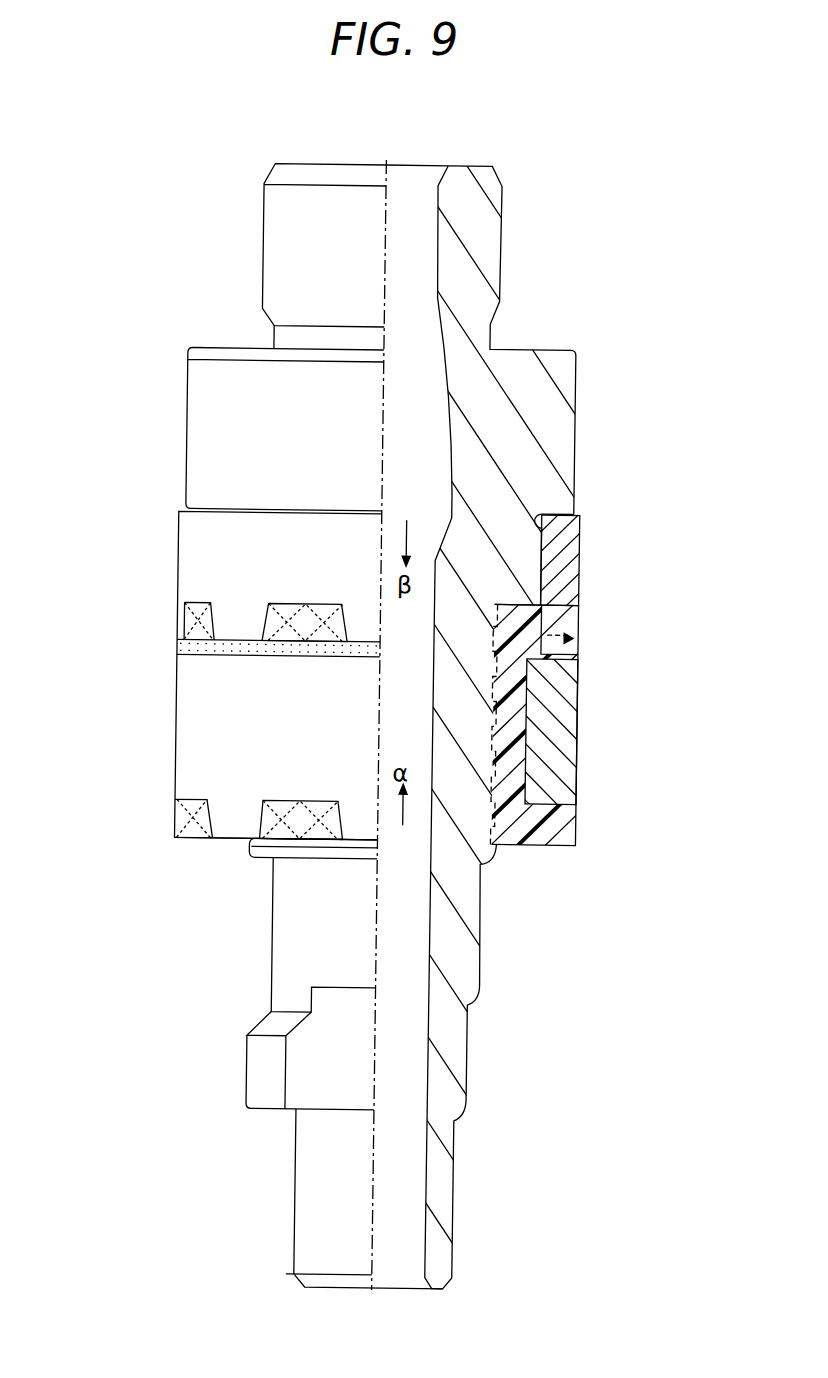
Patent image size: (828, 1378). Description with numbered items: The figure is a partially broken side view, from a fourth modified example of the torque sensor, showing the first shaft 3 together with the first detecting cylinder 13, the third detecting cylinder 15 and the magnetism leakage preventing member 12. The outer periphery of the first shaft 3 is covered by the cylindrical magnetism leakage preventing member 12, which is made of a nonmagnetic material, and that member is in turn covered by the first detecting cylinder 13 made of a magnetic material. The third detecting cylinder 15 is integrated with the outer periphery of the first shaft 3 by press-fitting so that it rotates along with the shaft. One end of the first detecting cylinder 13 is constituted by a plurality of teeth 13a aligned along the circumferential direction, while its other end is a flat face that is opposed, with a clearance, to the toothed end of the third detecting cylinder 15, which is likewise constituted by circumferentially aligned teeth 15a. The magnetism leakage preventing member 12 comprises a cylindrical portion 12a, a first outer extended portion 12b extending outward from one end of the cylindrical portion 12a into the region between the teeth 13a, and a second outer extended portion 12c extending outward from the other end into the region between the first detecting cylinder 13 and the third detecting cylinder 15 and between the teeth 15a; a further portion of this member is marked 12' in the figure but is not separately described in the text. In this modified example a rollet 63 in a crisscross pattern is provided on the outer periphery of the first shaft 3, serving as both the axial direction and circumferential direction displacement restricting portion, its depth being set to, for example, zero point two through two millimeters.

The first shaft 3 is at (558, 407).
The magnetism leakage preventing member 12 is at (576, 721).
The cylindrical portion 12a is at (519, 672).
The first outer extended portion 12b is at (560, 832).
The second outer extended portion 12c is at (573, 637).
The inner periphery of piezoelectric element 12' is at (441, 723).
The first detecting cylinder 13 is at (565, 775).
The teeth 13a is at (244, 827).
The third detecting cylinder 15 is at (575, 553).
The teeth 15a is at (248, 622).
The rollet 63 is at (183, 828).